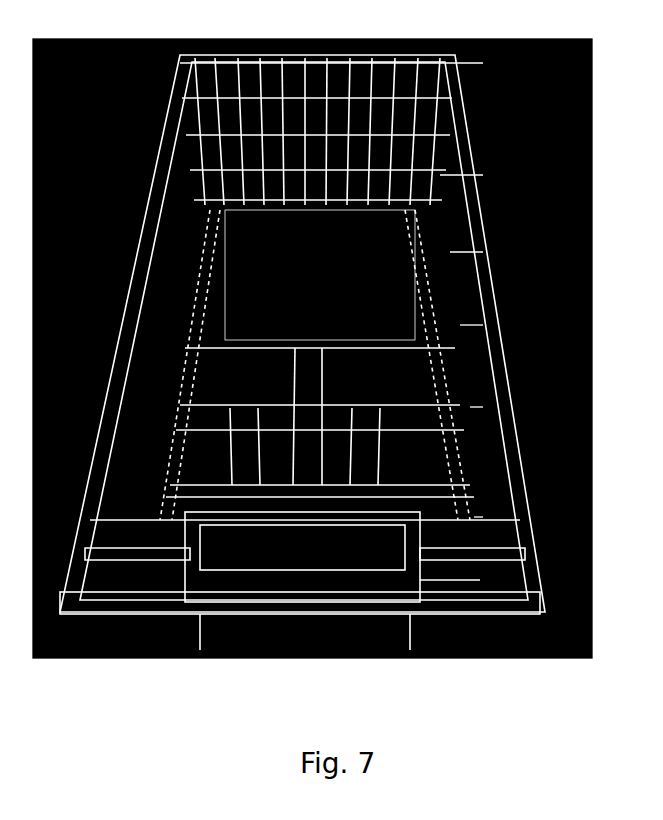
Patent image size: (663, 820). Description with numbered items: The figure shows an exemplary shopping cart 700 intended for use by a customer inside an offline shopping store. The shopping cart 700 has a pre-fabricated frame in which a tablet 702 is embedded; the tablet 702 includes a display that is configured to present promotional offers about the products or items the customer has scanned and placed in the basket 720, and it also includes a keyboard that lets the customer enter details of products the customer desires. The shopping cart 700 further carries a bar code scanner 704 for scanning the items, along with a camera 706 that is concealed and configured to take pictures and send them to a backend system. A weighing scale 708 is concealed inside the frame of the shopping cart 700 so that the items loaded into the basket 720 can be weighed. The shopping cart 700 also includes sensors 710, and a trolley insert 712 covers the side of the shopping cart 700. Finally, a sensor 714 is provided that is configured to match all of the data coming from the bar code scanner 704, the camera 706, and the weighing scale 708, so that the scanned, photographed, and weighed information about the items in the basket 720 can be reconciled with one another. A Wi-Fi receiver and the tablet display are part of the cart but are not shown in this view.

The shopping cart 700 is at (46, 17).
The tablet 702 is at (480, 580).
The bar code scanner 704 is at (483, 517).
The camera 706 is at (483, 407).
The weighing scale 708 is at (483, 325).
The sensors 710 is at (483, 252).
The trolley insert 712 is at (483, 175).
The sensor 714 is at (483, 63).
The basket 720 is at (326, 281).